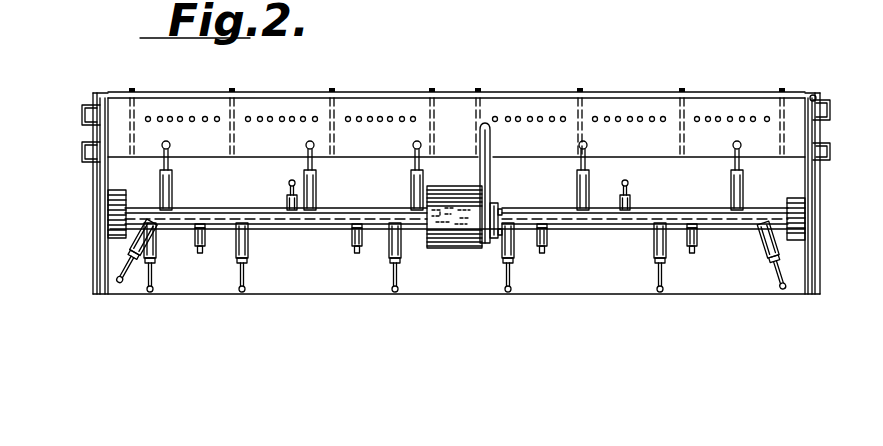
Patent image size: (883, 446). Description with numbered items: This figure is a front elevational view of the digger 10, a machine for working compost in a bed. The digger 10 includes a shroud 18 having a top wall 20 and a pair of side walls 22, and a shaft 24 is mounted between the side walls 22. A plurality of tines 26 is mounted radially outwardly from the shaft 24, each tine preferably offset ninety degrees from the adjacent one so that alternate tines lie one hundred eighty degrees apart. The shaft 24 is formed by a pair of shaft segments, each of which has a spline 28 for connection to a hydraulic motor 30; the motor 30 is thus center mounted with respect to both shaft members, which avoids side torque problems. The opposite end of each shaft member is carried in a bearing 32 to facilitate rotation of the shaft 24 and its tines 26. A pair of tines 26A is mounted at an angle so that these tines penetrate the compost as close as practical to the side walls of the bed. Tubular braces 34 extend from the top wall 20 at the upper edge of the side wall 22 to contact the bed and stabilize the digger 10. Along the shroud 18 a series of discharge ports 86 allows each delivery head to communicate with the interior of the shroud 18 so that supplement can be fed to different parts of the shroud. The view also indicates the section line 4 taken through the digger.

The section line 4- 4 is at (438, 33).
The digger 10 is at (876, 60).
The shroud 18 is at (752, 66).
The top wall 20 is at (636, 92).
The side walls 22 is at (118, 222).
The shaft 24 is at (325, 225).
The tines 26 is at (240, 277).
The angled tines 26A is at (127, 272).
The spline 28 is at (449, 226).
The hydraulic motor 30 is at (466, 240).
The bearing 32 is at (113, 190).
The tubular braces 34 is at (816, 188).
The discharge ports 86 is at (767, 117).